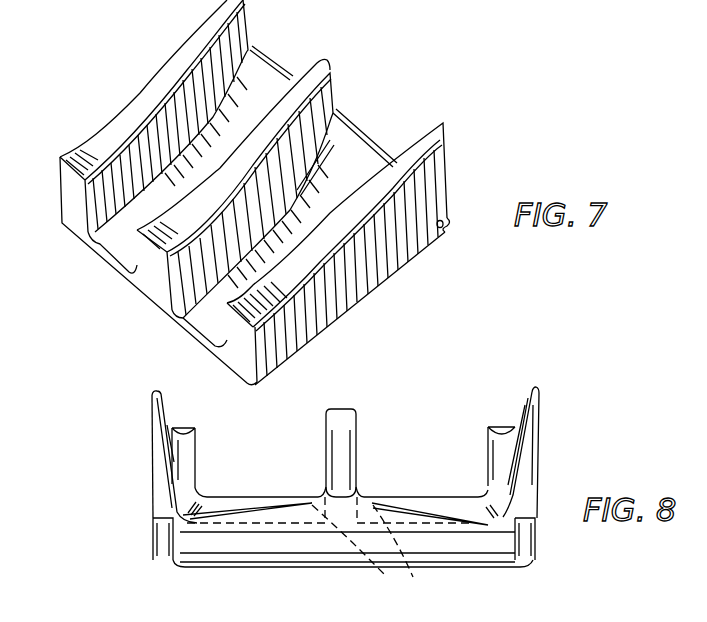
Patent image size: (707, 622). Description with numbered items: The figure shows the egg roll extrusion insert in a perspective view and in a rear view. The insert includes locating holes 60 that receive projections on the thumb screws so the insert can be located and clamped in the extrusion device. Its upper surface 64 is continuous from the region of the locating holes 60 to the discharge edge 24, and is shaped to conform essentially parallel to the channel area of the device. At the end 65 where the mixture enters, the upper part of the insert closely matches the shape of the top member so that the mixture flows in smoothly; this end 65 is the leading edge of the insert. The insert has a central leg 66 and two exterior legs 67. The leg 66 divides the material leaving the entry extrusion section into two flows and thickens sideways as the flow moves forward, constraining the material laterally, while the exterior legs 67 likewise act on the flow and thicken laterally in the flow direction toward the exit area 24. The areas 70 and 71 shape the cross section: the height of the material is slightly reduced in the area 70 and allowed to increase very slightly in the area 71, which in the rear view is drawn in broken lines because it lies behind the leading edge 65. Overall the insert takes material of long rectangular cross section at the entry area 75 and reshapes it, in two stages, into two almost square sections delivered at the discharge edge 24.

In FIG. 7, the discharge edge 24 is at (153, 303).
In FIG. 7, the upper surface 64 is at (120, 255).
In FIG. 7, the entry area 75 is at (373, 137).
In FIG. 7, the locating holes 60 is at (447, 228).
In FIG. 8, the end of insert (leading edge) 65 is at (303, 550).
In FIG. 8, the leg 66 is at (343, 470).
In FIG. 8, the exterior legs 67 is at (173, 480).
In FIG. 8, the area 70 is at (168, 513).
In FIG. 8, the area 71 is at (413, 580).